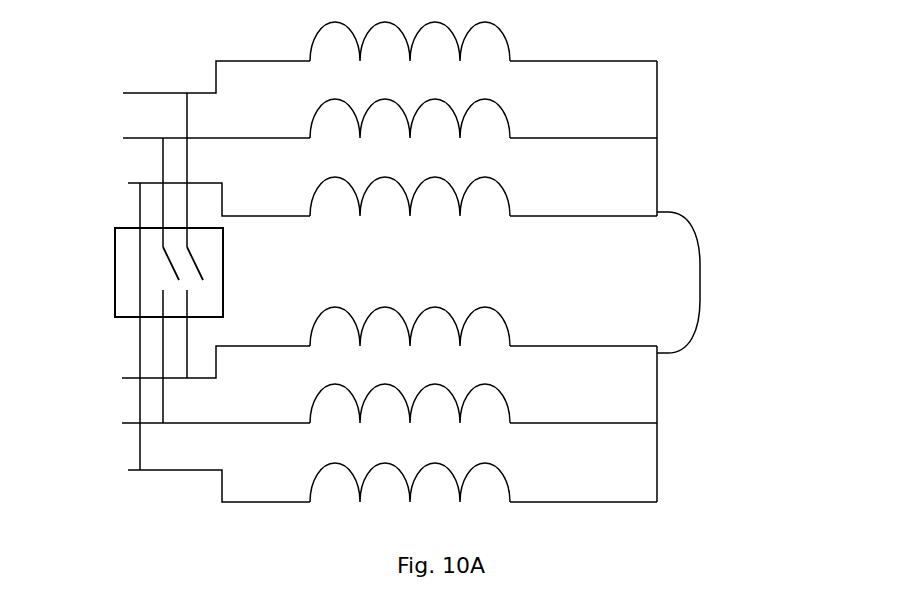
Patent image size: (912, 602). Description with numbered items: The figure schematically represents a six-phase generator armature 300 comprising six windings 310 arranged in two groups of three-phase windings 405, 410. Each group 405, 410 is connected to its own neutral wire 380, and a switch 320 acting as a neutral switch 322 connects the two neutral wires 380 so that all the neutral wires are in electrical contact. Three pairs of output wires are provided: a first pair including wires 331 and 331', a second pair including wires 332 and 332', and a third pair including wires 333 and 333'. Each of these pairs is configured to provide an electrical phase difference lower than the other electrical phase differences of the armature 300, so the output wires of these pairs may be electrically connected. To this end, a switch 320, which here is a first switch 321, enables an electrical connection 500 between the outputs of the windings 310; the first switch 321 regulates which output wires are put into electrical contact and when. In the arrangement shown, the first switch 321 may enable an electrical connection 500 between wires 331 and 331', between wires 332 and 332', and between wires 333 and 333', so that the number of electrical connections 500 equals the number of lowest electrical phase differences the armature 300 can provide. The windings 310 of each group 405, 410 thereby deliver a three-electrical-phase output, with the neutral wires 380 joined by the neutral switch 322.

The armature 300 is at (444, 263).
The winding 310 is at (527, 62).
The switch 320 is at (409, 282).
The first switch 321 is at (115, 262).
The neutral switch 322 is at (700, 262).
The output wire 331 is at (216, 202).
The output wire 332 is at (216, 255).
The output wire 333 is at (219, 186).
The output wire 331' is at (216, 328).
The output wire 332' is at (216, 397).
The output wire 333' is at (219, 471).
The neutral wire 380 is at (657, 120).
The group of windings 405 is at (470, 222).
The group of windings 410 is at (455, 390).
The electrical connection 500 is at (140, 210).